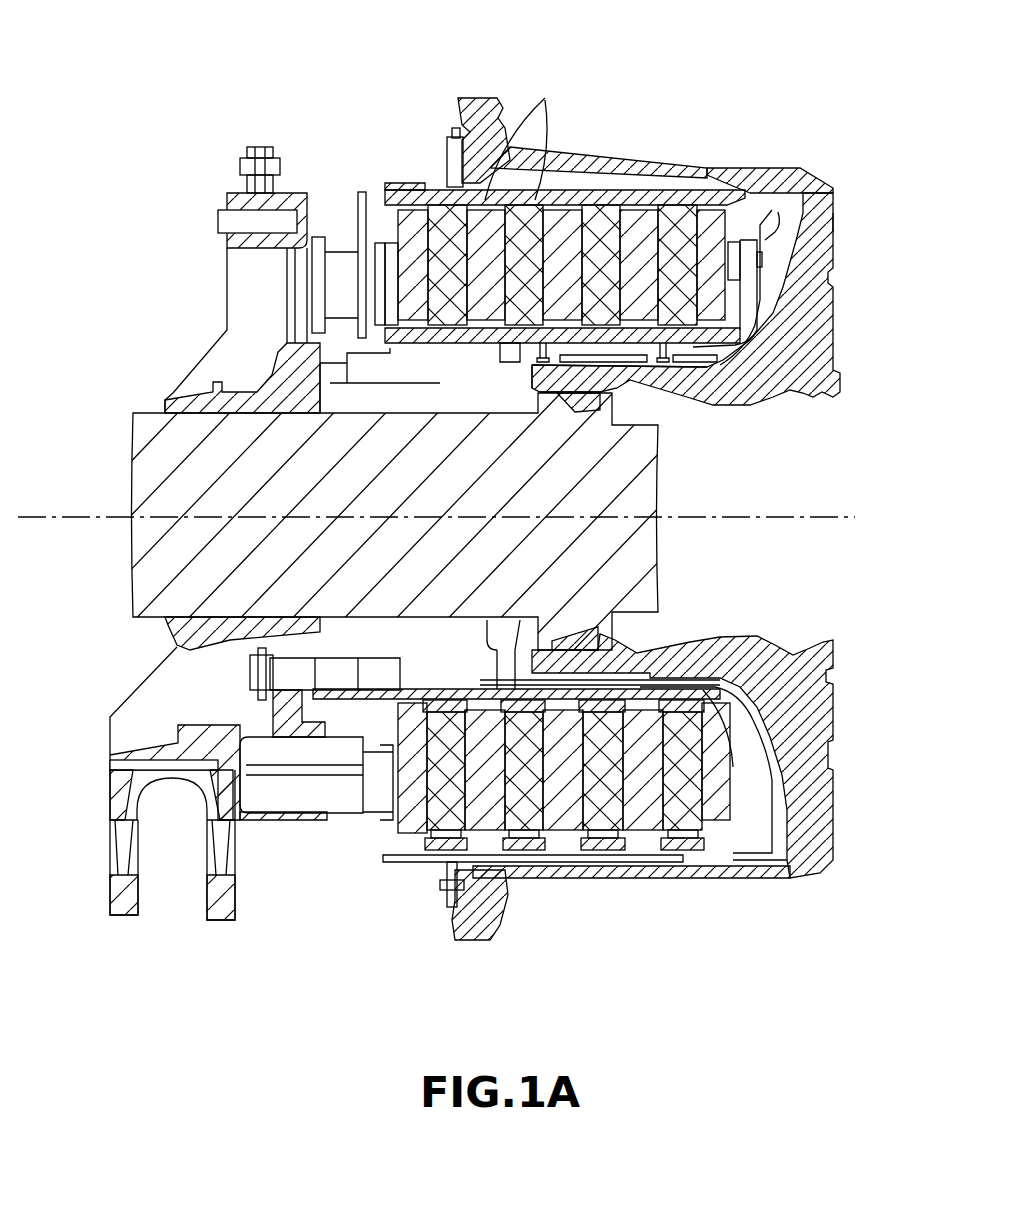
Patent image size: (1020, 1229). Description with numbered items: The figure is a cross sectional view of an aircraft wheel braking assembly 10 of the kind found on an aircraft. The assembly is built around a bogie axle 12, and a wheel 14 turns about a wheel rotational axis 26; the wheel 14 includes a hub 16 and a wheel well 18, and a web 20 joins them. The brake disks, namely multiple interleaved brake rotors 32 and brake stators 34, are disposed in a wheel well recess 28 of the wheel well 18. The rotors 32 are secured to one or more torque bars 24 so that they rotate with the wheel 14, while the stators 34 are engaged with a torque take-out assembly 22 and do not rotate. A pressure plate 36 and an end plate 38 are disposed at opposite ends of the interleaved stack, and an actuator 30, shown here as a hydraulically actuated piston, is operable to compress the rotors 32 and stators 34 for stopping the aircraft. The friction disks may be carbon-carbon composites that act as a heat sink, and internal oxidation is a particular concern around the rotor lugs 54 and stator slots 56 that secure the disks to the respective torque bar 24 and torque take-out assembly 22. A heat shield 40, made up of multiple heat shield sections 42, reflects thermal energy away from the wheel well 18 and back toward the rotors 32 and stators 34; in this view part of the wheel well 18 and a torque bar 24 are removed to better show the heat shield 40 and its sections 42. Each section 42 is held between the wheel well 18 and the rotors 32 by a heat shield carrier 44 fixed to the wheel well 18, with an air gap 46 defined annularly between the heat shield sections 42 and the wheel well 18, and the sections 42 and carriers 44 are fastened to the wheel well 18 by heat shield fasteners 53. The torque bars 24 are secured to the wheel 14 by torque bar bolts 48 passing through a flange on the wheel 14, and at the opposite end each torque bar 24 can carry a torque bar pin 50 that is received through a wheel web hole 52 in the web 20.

The aircraft wheel braking assembly 10 is at (872, 100).
The bogie axle 12 is at (113, 460).
The wheel 14 is at (686, 135).
The hub 16 is at (640, 397).
The wheel well 18 is at (825, 183).
The web 20 is at (799, 274).
The torque take-out assembly 22 is at (442, 366).
The torque bar 24 is at (397, 187).
The wheel rotational axis 26 is at (722, 517).
The wheel well recess 28 is at (777, 307).
The actuator 30 is at (293, 842).
The brake rotor 32 is at (436, 280).
The brake stator 34 is at (474, 280).
The pressure plate 36 is at (402, 280).
The end plate 38 is at (700, 280).
The heat shield 40 is at (403, 898).
The heat shield section 42 is at (597, 180).
The heat shield carrier 44 is at (460, 873).
The air gap 46 is at (495, 150).
The torque bar bolt 48 is at (457, 170).
The torque bar pin 50 is at (778, 225).
The wheel web hole 52 is at (833, 232).
The heat shield fastener 53 is at (460, 880).
The rotor lug 54 is at (525, 135).
The stator slot 56 is at (513, 353).